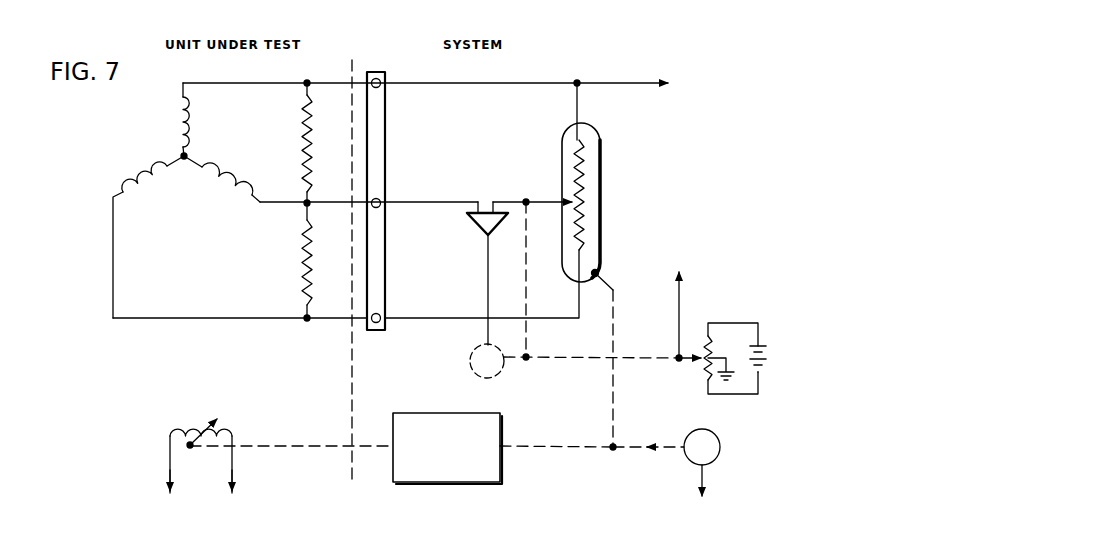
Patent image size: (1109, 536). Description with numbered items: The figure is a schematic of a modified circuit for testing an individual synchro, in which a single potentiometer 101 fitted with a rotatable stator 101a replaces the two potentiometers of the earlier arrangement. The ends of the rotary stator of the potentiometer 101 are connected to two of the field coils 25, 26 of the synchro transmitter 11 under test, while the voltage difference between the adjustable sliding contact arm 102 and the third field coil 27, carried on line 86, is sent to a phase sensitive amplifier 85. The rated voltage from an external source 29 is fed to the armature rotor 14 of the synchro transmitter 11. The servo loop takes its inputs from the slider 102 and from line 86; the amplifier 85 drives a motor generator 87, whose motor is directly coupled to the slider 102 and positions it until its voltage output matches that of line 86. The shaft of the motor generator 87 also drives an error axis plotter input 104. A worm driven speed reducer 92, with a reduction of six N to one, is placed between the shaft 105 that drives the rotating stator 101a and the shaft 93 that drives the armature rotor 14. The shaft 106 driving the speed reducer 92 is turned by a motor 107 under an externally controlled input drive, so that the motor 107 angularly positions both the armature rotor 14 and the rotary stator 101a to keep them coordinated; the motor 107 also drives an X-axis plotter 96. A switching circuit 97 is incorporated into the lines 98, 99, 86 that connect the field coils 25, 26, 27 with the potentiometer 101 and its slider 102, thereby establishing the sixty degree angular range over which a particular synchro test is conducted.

The synchro transmitter 11 is at (196, 150).
The armature rotor 14 is at (200, 428).
The field coil 25 is at (190, 128).
The field coil 26 is at (148, 185).
The third field coil 27 is at (228, 168).
The external source 29 is at (188, 490).
The phase sensitive amplifier 85 is at (475, 222).
The line 86 is at (263, 202).
The motor generator 87 is at (468, 370).
The worm driven speed reducer 92 is at (490, 413).
The shaft 93 is at (355, 432).
The X-axis plotter 96 is at (701, 480).
The switching circuit 97 is at (387, 133).
The line 98 is at (461, 84).
The line 99 is at (311, 320).
The potentiometer 101 is at (588, 167).
The rotatable stator 101a is at (600, 240).
The adjustable sliding contact arm 102 is at (551, 192).
The error axis plotter input 104 is at (683, 275).
The shaft 105 is at (616, 385).
The shaft 106 is at (663, 444).
The motor 107 is at (720, 441).